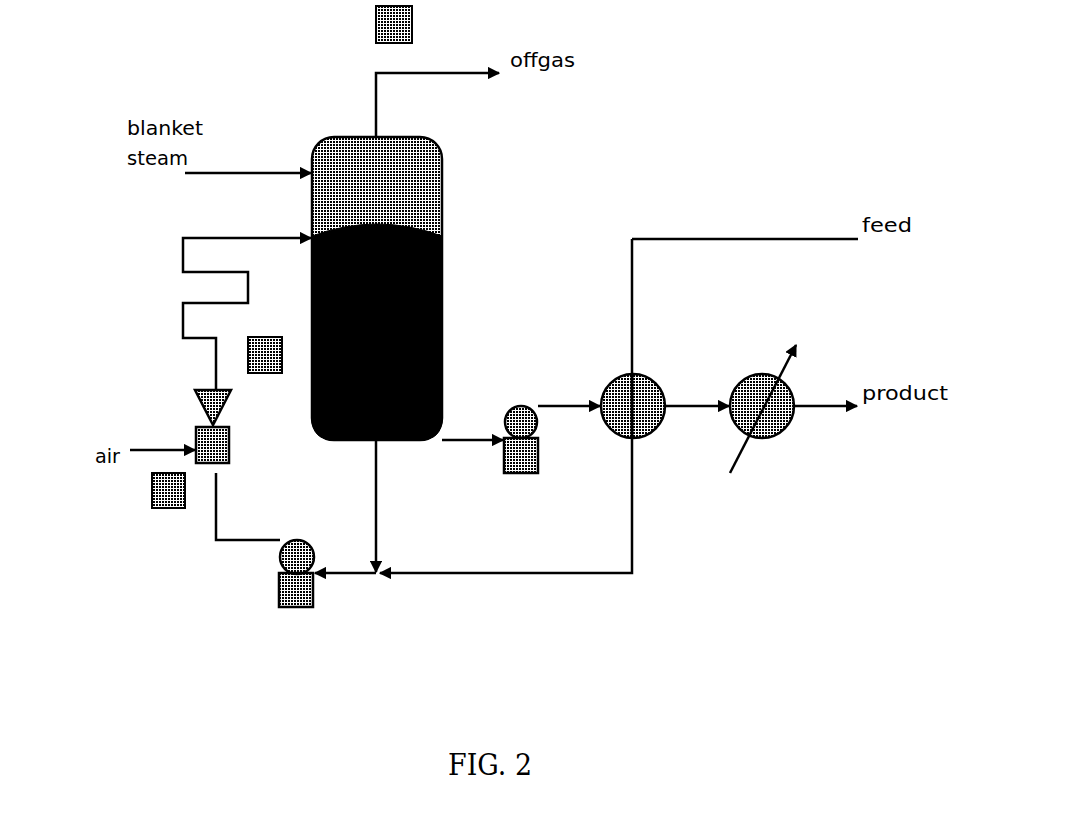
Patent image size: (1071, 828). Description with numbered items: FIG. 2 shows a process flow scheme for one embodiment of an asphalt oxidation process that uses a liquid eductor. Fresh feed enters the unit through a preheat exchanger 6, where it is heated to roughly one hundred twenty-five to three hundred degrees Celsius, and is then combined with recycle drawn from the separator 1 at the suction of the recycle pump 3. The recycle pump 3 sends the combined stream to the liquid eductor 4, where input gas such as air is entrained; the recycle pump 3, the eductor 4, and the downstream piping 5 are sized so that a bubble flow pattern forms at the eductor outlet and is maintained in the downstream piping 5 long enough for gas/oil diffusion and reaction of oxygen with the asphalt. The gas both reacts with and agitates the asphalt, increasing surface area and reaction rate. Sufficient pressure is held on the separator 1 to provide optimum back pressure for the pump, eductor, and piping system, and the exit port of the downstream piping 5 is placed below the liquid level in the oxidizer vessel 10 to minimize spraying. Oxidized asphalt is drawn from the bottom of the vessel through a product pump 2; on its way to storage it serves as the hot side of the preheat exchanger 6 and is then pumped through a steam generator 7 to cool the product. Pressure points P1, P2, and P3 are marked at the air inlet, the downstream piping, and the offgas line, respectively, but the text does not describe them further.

The separator 1 is at (445, 288).
The product pump 2 is at (554, 473).
The recycle pump 3 is at (329, 606).
The liquid eductor 4 is at (260, 448).
The downstream piping 5 is at (170, 314).
The preheat exchanger 6 is at (673, 359).
The steam generator 7 is at (815, 377).
The oxidizer vessel 10 is at (442, 267).
The pressure point P1 is at (168, 490).
The pressure point P2 is at (265, 355).
The pressure point P3 is at (394, 24).